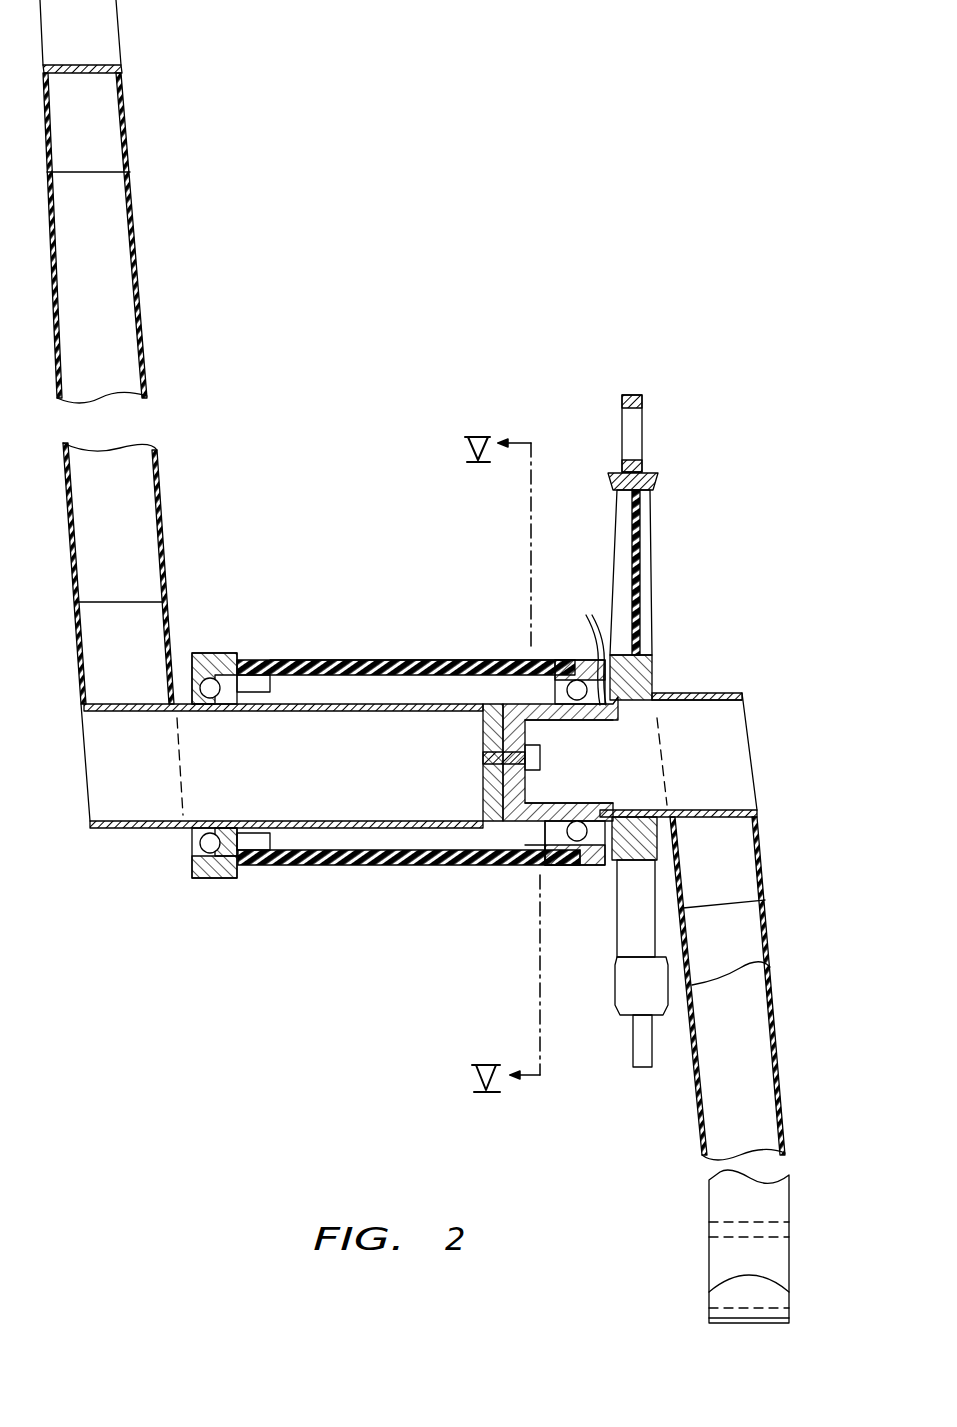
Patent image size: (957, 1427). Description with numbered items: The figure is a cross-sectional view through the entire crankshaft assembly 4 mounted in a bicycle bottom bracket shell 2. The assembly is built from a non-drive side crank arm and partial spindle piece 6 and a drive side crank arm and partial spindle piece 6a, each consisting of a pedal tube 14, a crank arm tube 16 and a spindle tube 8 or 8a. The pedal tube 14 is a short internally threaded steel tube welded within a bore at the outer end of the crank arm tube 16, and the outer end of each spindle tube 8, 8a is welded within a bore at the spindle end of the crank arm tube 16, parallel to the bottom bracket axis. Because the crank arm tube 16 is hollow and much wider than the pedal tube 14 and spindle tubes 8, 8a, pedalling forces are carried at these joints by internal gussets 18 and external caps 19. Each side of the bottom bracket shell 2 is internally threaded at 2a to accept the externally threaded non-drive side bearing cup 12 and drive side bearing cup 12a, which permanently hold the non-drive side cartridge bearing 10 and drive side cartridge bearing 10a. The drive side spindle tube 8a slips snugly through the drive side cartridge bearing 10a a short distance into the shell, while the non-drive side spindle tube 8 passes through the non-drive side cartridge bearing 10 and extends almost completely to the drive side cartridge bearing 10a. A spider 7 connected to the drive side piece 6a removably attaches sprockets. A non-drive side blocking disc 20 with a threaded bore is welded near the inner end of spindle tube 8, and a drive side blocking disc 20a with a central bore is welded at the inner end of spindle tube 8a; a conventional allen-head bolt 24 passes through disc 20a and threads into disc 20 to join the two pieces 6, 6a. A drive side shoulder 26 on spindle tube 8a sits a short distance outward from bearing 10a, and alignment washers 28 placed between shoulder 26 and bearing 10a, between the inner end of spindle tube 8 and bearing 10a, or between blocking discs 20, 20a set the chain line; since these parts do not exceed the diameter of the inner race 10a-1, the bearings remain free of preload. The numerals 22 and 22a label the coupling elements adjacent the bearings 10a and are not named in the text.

The bottom bracket shell 2 is at (312, 660).
The internal threads of bottom bracket shell 2a is at (275, 660).
The crankshaft assembly 4 is at (746, 750).
The non-drive side crank arm and partial spindle piece 6 is at (168, 548).
The drive side crank arm and partial spindle piece 6a is at (768, 878).
The spider 7 is at (652, 570).
The non-drive side spindle tube 8 is at (298, 832).
The drive side spindle tube 8a is at (690, 693).
The non-drive side cartridge bearing 10 is at (193, 665).
The drive side cartridge bearing 10a is at (595, 862).
The inner race of drive side cartridge bearing 10a-1 is at (525, 858).
The non-drive side bearing cup 12 is at (232, 655).
The drive side bearing cup 12a is at (560, 860).
The pedal tube 14 is at (122, 69).
The crank arm tube 16 is at (147, 290).
The internal gusset 18 is at (115, 150).
The external cap 19 is at (770, 1288).
The non-drive side blocking disc 20 is at (490, 705).
The drive side blocking disc 20a is at (525, 792).
The coupling member 22 is at (492, 660).
The coupling member 22a is at (470, 858).
The allen-head bolt 24 is at (483, 758).
The drive side shoulder 26 is at (610, 860).
The alignment washers 28 is at (563, 658).